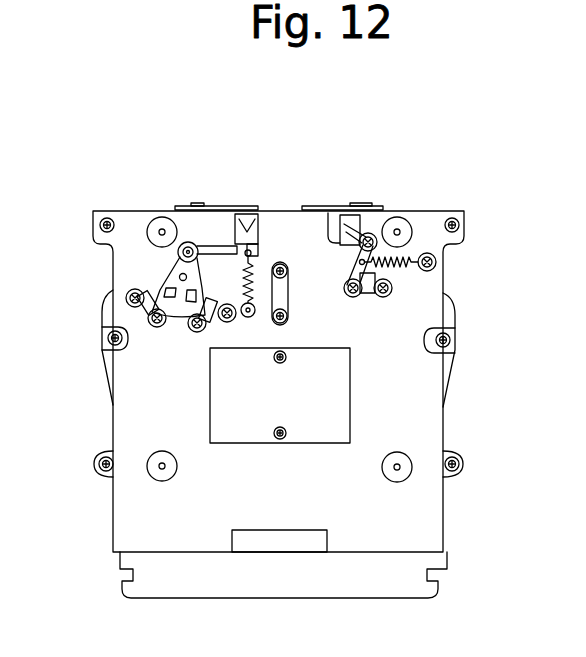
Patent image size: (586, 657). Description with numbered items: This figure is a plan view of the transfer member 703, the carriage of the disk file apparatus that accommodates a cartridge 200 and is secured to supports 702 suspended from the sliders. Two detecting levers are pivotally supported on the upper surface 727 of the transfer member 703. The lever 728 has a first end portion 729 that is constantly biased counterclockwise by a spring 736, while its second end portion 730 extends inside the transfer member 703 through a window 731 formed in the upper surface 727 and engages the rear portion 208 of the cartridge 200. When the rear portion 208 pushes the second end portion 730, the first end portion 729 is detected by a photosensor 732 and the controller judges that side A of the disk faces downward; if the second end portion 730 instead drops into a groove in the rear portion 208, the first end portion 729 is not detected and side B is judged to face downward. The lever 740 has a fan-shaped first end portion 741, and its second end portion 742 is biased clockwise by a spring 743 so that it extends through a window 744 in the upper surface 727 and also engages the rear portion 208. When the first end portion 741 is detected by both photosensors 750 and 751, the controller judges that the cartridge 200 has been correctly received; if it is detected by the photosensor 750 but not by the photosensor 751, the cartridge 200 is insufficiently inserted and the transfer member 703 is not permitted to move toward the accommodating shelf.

The cartridge 200 is at (312, 588).
The rear portion of the cartridge 208 is at (197, 207).
The supports 702 is at (274, 330).
The transfer member 703 is at (305, 498).
The upper surface of the transfer member 727 is at (280, 218).
The lever 728 is at (375, 252).
The first end portion of the lever 729 is at (338, 273).
The second end portion of the lever 730 is at (383, 218).
The window 731 is at (340, 215).
The photosensor 732 is at (377, 292).
The spring 736 is at (405, 272).
The lever 740 is at (178, 254).
The first end portion of the lever 741 is at (186, 320).
The second end portion of the lever 742 is at (235, 220).
The spring 743 is at (262, 266).
The window 744 is at (248, 216).
The photosensor 750 is at (128, 341).
The photosensor 751 is at (146, 314).